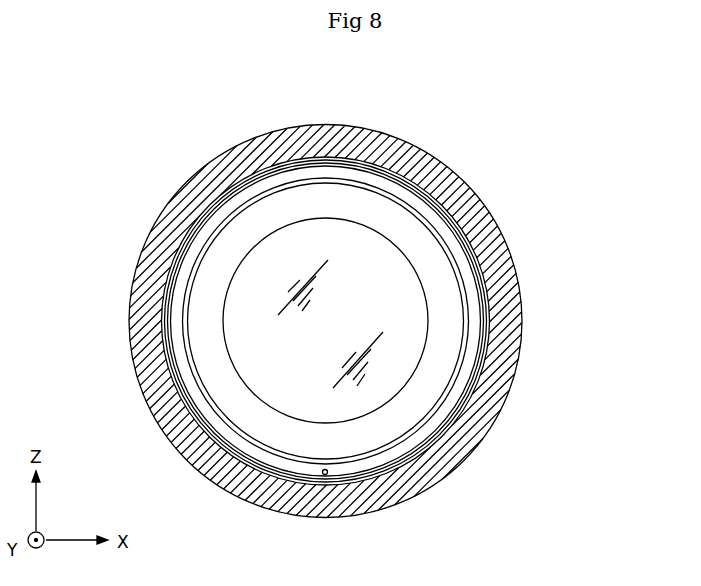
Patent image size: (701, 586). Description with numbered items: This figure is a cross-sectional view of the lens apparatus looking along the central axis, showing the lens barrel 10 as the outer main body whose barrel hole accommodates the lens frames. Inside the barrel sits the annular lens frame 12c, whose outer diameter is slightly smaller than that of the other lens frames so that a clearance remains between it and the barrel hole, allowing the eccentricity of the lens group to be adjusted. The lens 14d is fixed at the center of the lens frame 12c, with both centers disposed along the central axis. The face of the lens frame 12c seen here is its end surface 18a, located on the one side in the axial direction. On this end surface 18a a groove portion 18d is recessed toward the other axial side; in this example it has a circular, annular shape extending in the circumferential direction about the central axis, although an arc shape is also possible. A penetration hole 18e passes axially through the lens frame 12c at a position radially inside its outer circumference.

The lens barrel 10 is at (508, 242).
The lens frame 12c is at (457, 309).
The lens 14d is at (380, 262).
The end surface 18a is at (270, 188).
The groove portion 18d is at (442, 435).
The penetration hole 18e is at (322, 476).